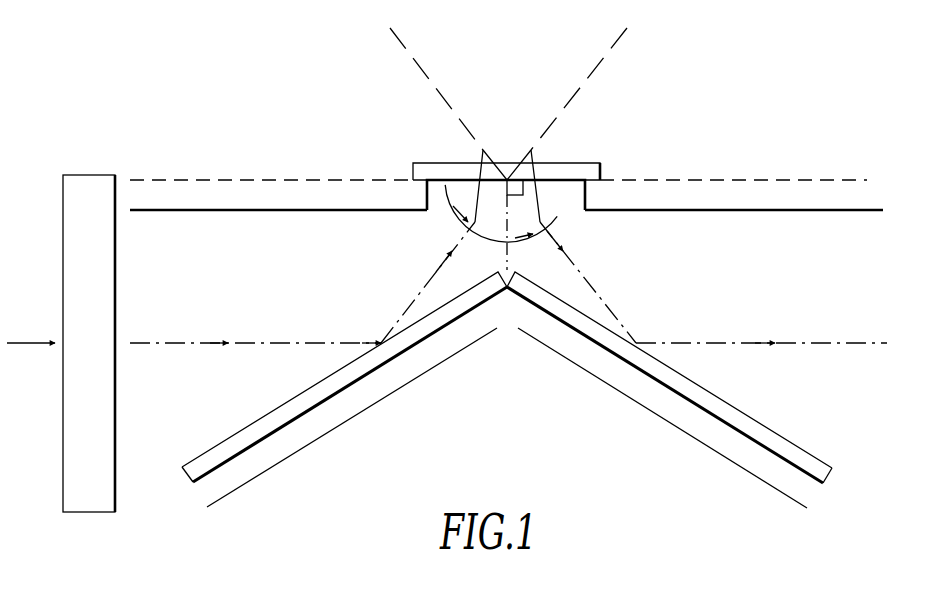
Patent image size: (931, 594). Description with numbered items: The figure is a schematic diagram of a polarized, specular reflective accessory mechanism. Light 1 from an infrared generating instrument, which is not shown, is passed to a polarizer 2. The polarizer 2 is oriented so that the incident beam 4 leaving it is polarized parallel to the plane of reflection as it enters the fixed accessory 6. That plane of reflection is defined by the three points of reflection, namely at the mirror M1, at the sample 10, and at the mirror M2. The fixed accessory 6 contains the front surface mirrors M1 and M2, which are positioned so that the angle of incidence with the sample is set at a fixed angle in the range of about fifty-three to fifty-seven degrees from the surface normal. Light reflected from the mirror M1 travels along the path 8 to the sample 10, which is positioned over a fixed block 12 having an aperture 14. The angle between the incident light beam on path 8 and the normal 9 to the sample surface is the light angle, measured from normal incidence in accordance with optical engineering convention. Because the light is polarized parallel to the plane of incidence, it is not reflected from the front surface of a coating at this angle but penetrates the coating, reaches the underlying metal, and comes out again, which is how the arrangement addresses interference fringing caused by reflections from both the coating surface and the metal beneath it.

The light 1 is at (13, 341).
The polarizer 2 is at (85, 512).
The incident beam 4 is at (272, 343).
The fixed accessory 6 is at (465, 382).
The path 8 is at (408, 303).
The normal 9 is at (508, 246).
The sample 10 is at (558, 163).
The fixed block 12 is at (270, 180).
The aperture 14 is at (562, 202).
The mirror M1 is at (267, 415).
The mirror M2 is at (753, 417).